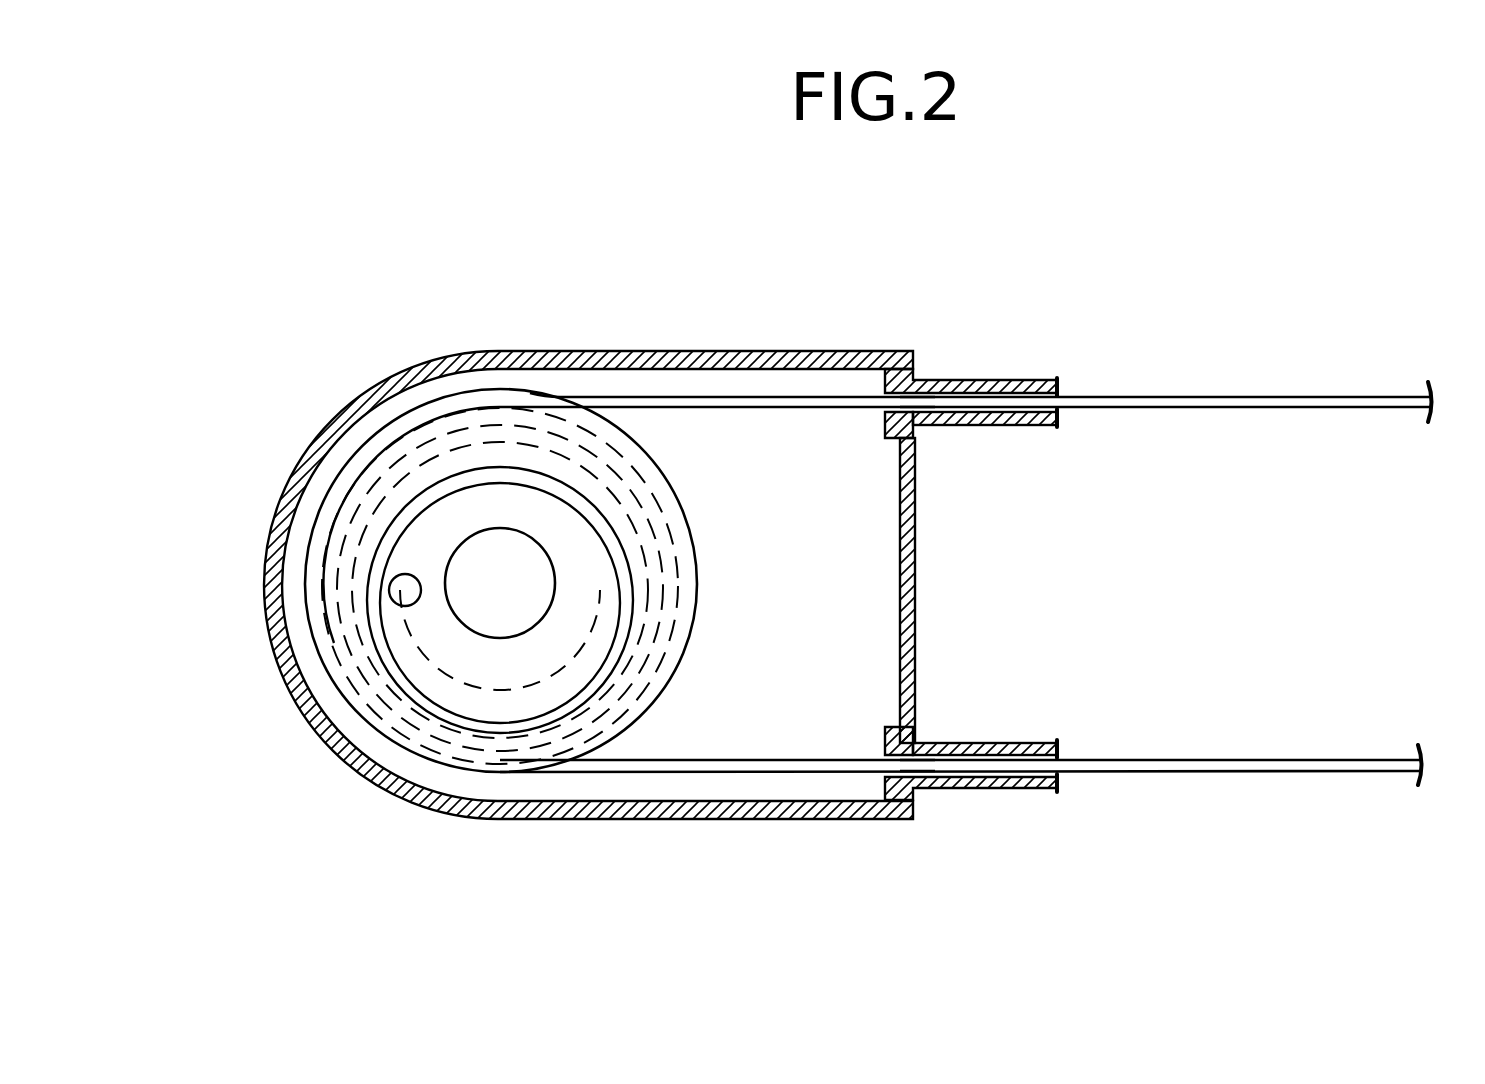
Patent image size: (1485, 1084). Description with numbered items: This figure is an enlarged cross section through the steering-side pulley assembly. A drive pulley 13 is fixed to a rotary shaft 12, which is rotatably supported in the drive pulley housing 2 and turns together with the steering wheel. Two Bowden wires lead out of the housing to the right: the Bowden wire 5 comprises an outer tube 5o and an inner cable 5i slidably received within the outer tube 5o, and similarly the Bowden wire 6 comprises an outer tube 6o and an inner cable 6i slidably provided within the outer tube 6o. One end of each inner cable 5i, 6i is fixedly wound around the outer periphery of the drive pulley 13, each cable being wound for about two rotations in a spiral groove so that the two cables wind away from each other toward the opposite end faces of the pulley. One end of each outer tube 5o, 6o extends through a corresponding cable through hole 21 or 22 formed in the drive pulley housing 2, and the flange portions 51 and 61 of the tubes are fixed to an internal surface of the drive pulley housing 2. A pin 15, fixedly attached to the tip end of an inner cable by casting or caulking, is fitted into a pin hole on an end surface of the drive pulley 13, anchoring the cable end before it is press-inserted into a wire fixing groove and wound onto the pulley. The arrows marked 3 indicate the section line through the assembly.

The drive pulley housing 2 is at (668, 345).
The cable through hole 21 is at (910, 752).
The cable through hole 22 is at (913, 405).
The section line 3- 3 is at (243, 590).
The Bowden wire 5 is at (1183, 665).
The outer tube 5o is at (1000, 743).
The inner cable 5i is at (1100, 760).
The flange portion 51 is at (885, 735).
The Bowden wire 6 is at (1175, 298).
The outer tube 6o is at (997, 380).
The inner cable 6i is at (1110, 397).
The flange portion 61 is at (885, 428).
The rotary shaft 12 is at (533, 576).
The drive pulley 13 is at (712, 500).
The pin 15 is at (417, 597).